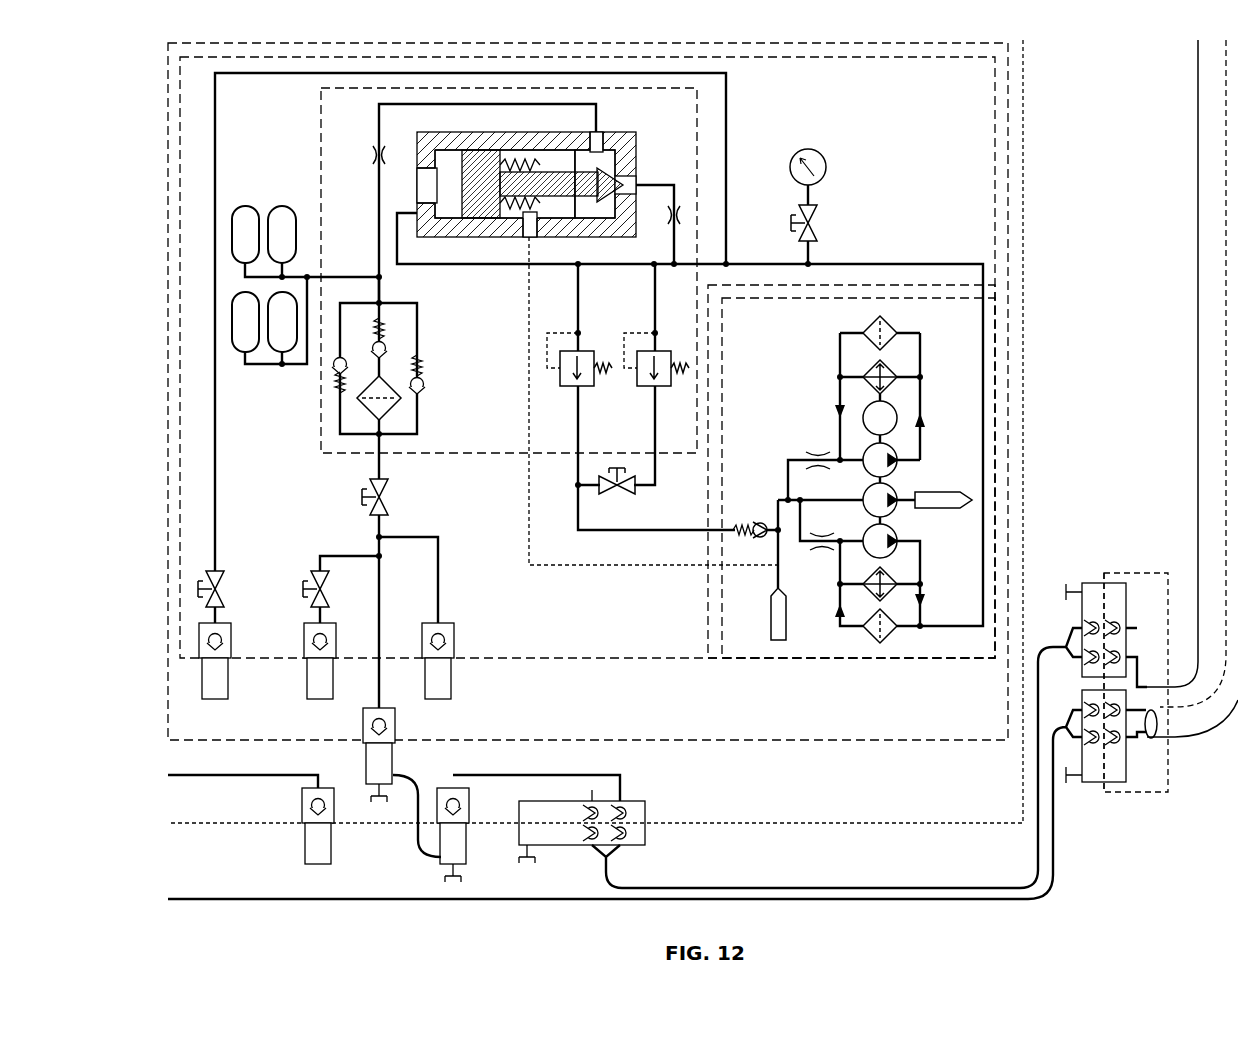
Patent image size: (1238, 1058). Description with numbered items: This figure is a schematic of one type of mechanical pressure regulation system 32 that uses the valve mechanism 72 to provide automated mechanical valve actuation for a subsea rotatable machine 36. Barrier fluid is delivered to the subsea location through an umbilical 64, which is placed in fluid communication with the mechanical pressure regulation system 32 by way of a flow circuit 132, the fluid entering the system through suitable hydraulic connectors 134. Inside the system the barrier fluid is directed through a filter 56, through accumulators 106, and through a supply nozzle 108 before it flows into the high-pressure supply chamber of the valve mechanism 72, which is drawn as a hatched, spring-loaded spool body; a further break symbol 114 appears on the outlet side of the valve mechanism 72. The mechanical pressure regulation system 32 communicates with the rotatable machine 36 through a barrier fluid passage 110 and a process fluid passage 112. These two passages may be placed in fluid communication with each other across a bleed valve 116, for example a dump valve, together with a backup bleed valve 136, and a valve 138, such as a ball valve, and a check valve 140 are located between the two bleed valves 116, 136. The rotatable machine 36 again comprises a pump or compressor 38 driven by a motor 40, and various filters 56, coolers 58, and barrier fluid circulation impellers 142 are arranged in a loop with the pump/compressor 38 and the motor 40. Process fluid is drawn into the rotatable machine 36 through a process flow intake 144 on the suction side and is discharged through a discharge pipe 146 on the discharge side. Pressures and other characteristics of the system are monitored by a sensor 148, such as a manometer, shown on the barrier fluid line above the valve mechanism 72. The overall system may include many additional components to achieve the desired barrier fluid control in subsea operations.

The mechanical pressure regulation system 32 is at (167, 398).
The rotatable machine 36 is at (790, 387).
The pump 38 is at (866, 496).
The motor 40 is at (897, 412).
The filter 56 is at (426, 406).
The cooler 58 is at (895, 370).
The umbilical 64 is at (1226, 332).
The valve mechanism 72 is at (622, 126).
The accumulator 106 is at (250, 208).
The supply nozzle 108 is at (368, 158).
The barrier fluid passage 110 is at (472, 270).
The process fluid passage 112 is at (529, 330).
The hose break 114 is at (684, 215).
The bleed valve 116 is at (646, 388).
The flow circuit 132 is at (412, 866).
The hydraulic connector 134 is at (304, 647).
The backup bleed valve 136 is at (586, 350).
The valve 138 is at (620, 498).
The check valve 140 is at (758, 522).
The barrier fluid circulation impeller 142 is at (864, 456).
The process flow intake 144 is at (771, 612).
The discharge pipe 146 is at (946, 492).
The sensor 148 is at (817, 220).